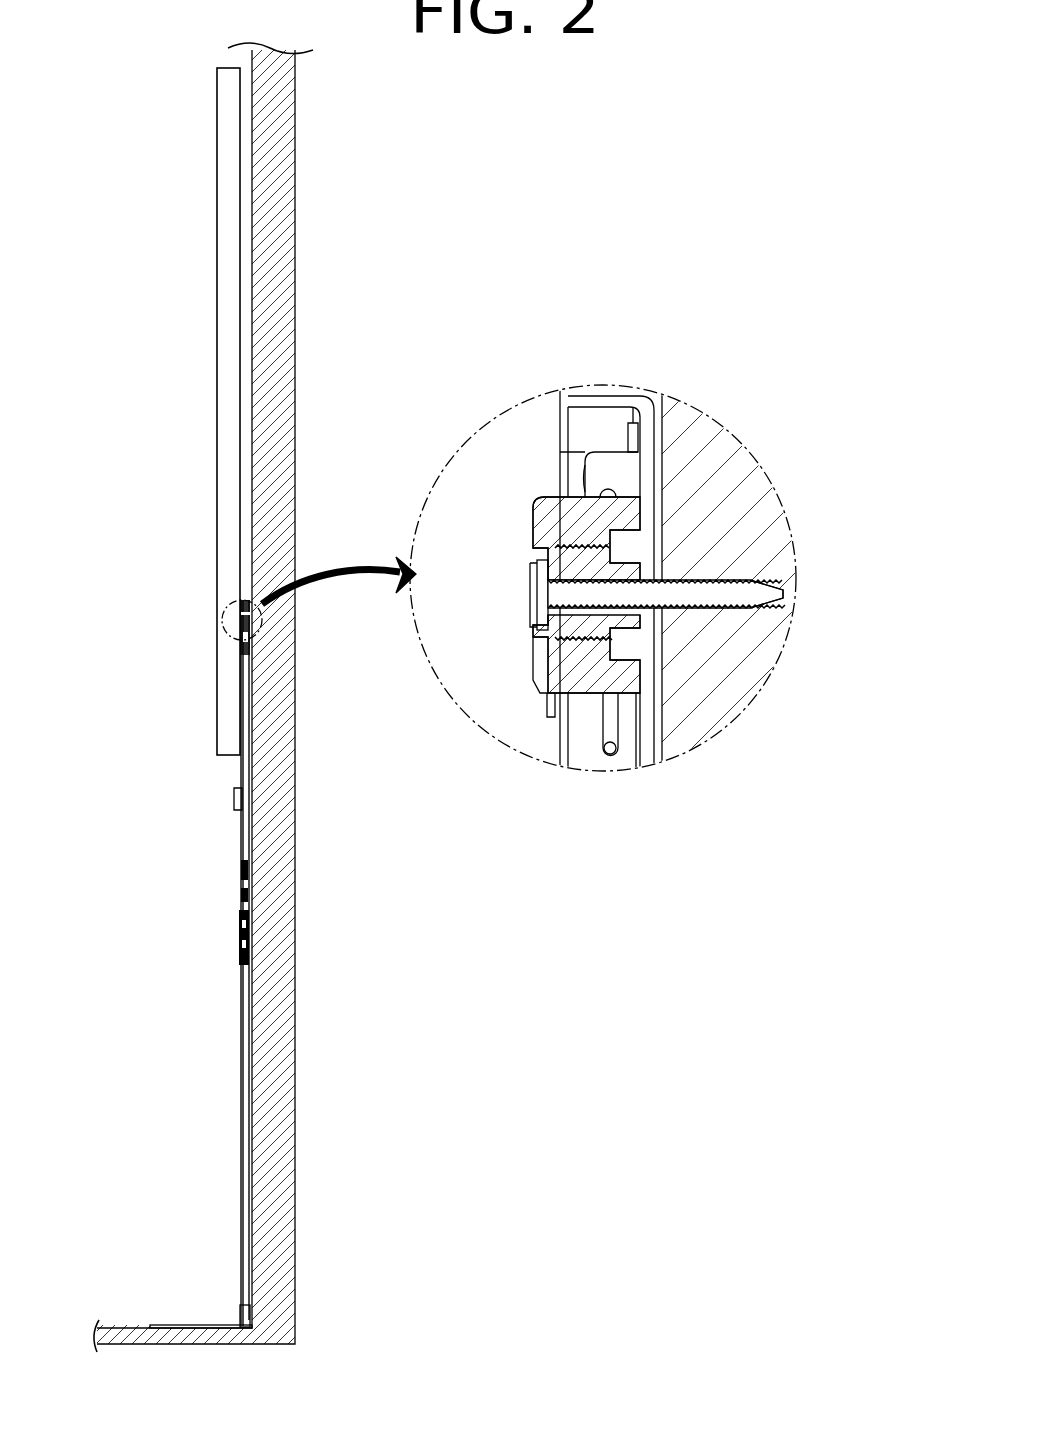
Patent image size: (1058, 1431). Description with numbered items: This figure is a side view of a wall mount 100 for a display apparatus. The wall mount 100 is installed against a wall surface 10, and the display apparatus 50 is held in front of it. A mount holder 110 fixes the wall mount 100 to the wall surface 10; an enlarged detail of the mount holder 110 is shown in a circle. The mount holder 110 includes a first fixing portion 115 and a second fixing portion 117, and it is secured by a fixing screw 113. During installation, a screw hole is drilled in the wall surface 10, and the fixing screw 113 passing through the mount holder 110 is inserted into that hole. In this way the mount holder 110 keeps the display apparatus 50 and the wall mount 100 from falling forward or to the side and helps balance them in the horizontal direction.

The wall surface 10 is at (288, 355).
The display apparatus 50 is at (220, 376).
The wall mount for a display apparatus 100 is at (200, 874).
The mount holder 110 is at (631, 588).
The fixing screw 113 is at (762, 590).
The first fixing portion 115 is at (655, 548).
The second fixing portion 117 is at (550, 518).